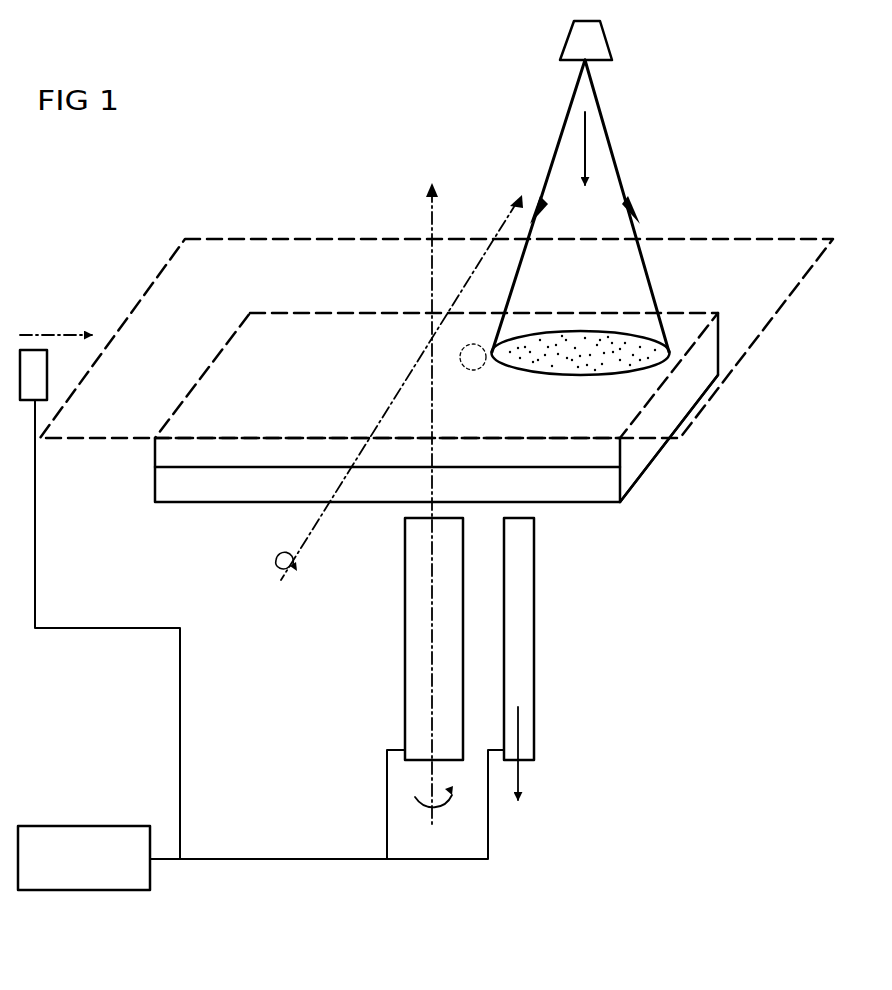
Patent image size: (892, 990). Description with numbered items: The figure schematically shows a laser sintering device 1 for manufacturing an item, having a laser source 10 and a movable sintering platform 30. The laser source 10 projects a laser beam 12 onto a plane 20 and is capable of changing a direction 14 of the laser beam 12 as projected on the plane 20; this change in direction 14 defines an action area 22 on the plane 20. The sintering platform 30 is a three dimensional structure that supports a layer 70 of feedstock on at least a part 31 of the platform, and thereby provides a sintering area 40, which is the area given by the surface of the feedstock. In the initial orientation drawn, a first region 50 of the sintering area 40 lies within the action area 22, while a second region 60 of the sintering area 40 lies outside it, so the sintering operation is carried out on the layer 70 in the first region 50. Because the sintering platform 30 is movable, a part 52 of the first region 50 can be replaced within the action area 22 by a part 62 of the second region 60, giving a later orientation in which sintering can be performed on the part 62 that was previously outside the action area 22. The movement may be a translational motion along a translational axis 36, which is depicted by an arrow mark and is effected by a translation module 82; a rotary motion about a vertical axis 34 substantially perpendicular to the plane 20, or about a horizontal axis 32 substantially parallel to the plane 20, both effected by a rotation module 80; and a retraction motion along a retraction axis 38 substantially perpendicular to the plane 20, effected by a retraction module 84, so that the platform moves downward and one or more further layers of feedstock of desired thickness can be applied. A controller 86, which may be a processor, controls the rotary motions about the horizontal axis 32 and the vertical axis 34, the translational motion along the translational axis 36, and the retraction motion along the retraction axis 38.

The laser sintering device 1 is at (746, 126).
The laser source 10 is at (600, 40).
The laser beam 12 is at (572, 100).
The direction 14 is at (590, 135).
The plane 20 is at (760, 334).
The action area 22 is at (613, 330).
The sintering platform 30 is at (647, 452).
The part 31 is at (690, 392).
The horizontal axis 32 is at (500, 230).
The vertical axis 34 is at (430, 210).
The translational axis 36 is at (60, 335).
The retraction axis 38 is at (520, 718).
The sintering area 40 is at (316, 340).
The first region 50 is at (572, 340).
The part 52 is at (645, 345).
The second region 60 is at (400, 320).
The part 62 is at (482, 362).
The layer 70 is at (597, 470).
The rotation module 80 is at (404, 648).
The translation module 82 is at (48, 385).
The retraction module 84 is at (536, 606).
The controller 86 is at (58, 892).